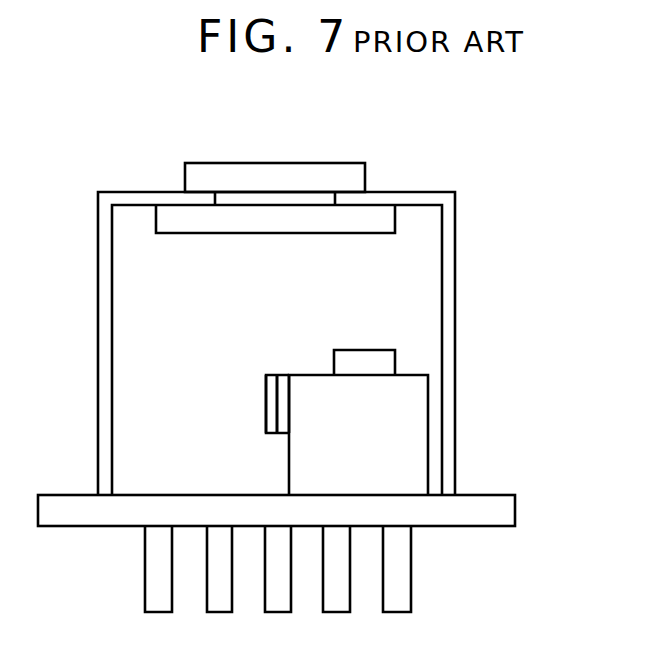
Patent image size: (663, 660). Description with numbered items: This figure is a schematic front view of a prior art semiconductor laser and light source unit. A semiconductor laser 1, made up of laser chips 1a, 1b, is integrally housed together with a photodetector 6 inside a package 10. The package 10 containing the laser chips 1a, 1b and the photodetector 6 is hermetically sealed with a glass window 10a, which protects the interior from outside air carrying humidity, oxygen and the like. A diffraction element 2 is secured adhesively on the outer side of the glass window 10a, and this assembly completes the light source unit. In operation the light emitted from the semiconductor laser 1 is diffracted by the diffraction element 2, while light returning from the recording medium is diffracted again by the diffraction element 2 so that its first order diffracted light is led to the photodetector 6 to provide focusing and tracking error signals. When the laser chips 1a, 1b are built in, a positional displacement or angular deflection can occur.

The package 10 is at (482, 270).
The glass window 10a is at (387, 205).
The diffraction element 2 is at (323, 163).
The photodetector 6 is at (366, 350).
The semiconductor laser 1 is at (245, 365).
The laser chip 1a is at (272, 375).
The laser chip 1b is at (284, 375).